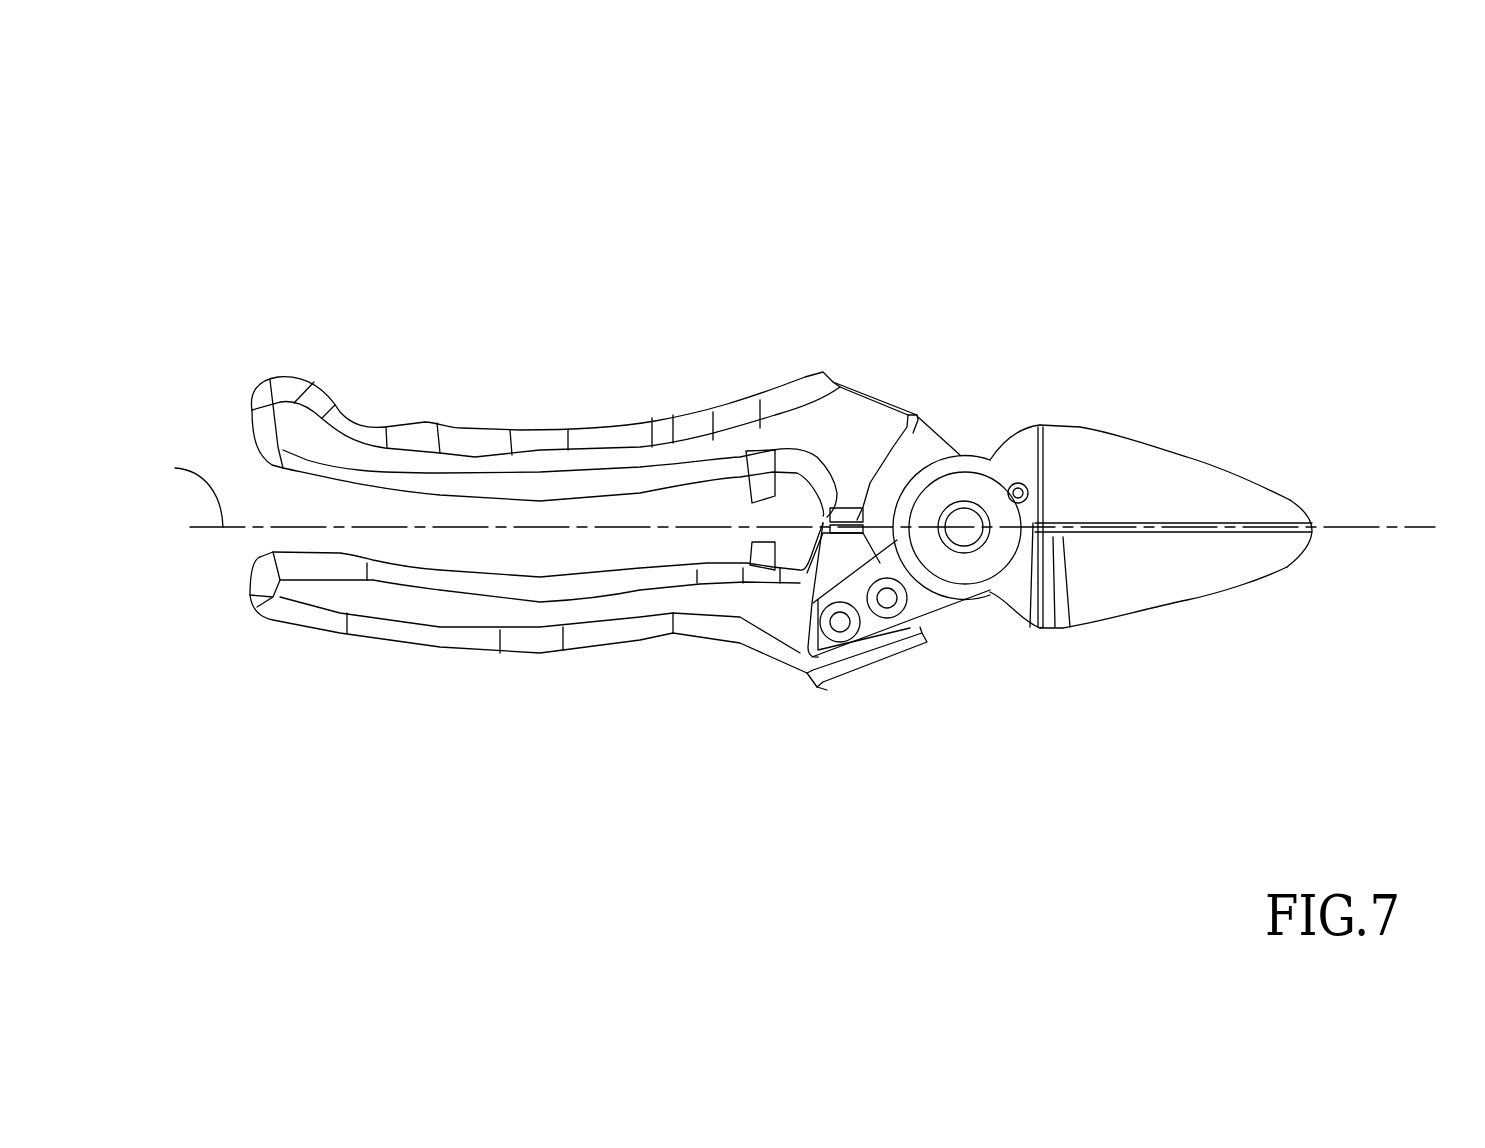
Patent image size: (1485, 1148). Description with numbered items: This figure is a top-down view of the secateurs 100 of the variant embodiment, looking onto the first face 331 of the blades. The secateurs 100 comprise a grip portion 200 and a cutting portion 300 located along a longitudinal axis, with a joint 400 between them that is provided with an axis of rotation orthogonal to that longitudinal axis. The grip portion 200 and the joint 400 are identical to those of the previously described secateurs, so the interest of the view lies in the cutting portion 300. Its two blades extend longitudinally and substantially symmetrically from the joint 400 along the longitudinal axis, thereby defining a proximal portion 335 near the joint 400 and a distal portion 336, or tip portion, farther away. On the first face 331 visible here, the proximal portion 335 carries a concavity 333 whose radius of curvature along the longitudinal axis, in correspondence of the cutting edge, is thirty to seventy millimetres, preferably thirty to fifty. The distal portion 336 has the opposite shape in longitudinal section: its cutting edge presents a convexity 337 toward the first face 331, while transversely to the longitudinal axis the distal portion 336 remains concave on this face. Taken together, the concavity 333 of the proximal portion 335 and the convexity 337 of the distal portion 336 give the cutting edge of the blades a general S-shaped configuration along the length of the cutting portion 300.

The secateurs 100 is at (388, 193).
The grip portion 200 is at (535, 342).
The cutting portion 300 is at (1166, 351).
The joint portion 400 is at (961, 355).
The first face 331 is at (1203, 585).
The concavity 333 is at (1133, 480).
The proximal portion 335 is at (999, 653).
The distal portion 336 is at (1338, 490).
The convexity 337 is at (1247, 555).